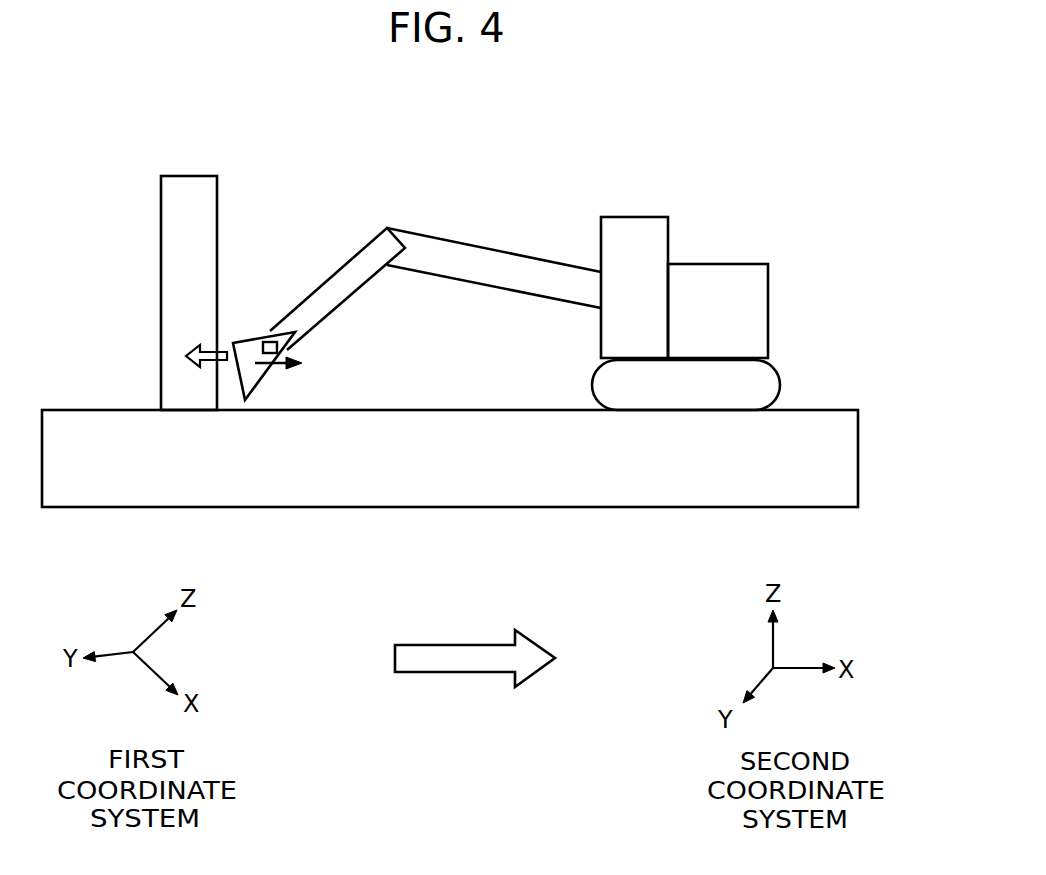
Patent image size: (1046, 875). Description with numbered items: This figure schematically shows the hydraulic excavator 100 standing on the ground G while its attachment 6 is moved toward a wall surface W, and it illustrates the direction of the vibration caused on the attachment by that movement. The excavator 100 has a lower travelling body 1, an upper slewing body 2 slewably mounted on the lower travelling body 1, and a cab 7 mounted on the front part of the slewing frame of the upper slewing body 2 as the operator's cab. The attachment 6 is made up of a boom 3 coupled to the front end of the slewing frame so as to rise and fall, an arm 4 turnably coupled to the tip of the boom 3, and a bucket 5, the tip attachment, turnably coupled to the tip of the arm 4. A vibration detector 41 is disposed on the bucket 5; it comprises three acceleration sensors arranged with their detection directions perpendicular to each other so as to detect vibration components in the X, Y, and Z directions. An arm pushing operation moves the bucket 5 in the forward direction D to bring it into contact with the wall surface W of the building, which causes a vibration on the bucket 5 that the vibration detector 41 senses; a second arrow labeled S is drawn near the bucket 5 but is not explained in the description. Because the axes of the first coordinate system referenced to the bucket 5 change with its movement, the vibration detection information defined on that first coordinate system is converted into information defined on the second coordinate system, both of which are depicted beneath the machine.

The hydraulic excavator 100 is at (519, 339).
The lower travelling body 1 is at (758, 383).
The upper slewing body 2 is at (776, 258).
The boom 3 is at (523, 272).
The arm 4 is at (348, 288).
The bucket 5 is at (242, 377).
The attachment 6 is at (409, 370).
The cab 7 is at (625, 228).
The vibration detector 41 is at (263, 347).
The wall surface W is at (217, 223).
The forward direction D is at (208, 366).
The direction of bucket movement S is at (270, 367).
The ground G is at (797, 410).